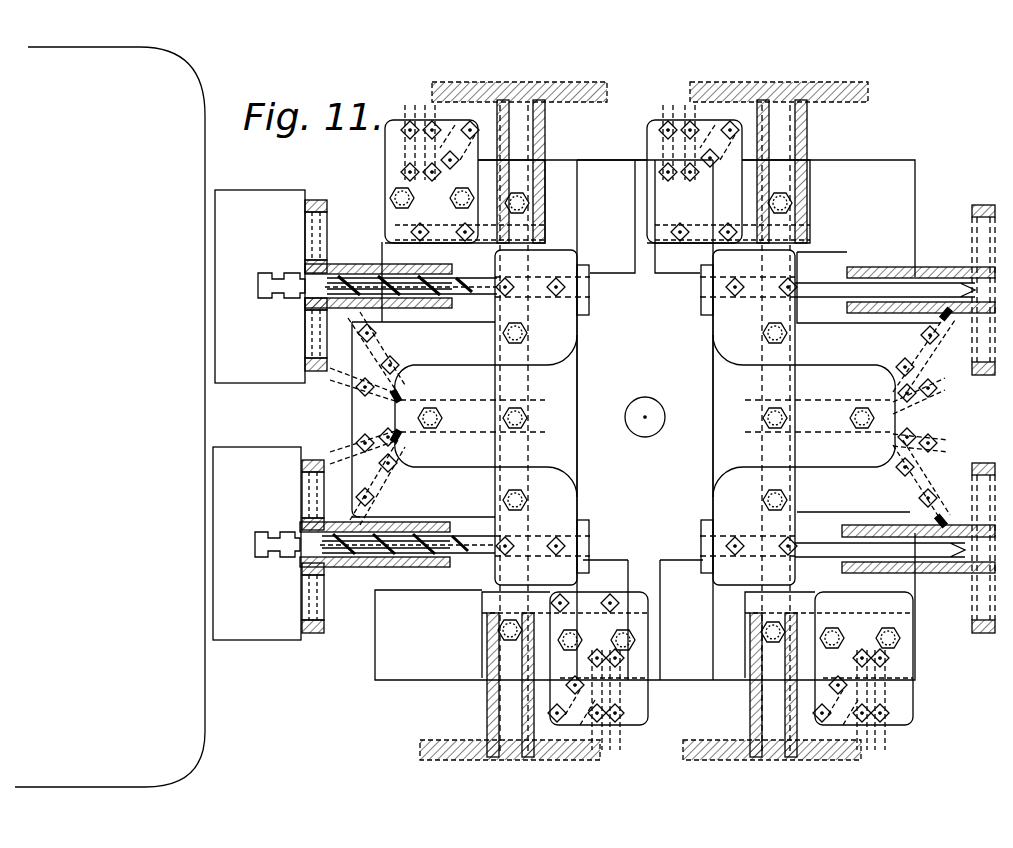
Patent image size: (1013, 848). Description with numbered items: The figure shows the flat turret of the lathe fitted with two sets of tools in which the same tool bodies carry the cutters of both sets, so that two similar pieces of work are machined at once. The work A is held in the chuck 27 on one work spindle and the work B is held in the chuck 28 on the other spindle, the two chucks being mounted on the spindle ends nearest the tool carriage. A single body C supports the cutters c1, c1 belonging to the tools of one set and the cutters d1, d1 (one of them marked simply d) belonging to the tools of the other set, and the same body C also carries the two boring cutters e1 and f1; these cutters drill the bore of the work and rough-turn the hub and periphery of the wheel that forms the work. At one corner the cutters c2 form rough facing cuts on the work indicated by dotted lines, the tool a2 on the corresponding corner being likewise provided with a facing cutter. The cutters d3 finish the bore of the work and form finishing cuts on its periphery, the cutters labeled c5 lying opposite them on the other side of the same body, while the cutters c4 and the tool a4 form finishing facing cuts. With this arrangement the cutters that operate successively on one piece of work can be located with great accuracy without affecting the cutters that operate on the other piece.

The chuck 28 is at (260, 286).
The chuck 27 is at (257, 543).
The work B is at (324, 207).
The work A is at (307, 633).
The boring cutter f1 is at (356, 278).
The boring cutter e1 is at (352, 515).
The cam follower chain d is at (352, 328).
The cutter d1 is at (348, 378).
The cutter c1 is at (348, 452).
The body C is at (625, 298).
The tool a4 is at (413, 125).
The cutter c4 is at (682, 125).
The right upper follower chain c5 is at (952, 290).
The cutter d3 is at (950, 448).
The tool a2 is at (610, 722).
The cutter c2 is at (828, 722).